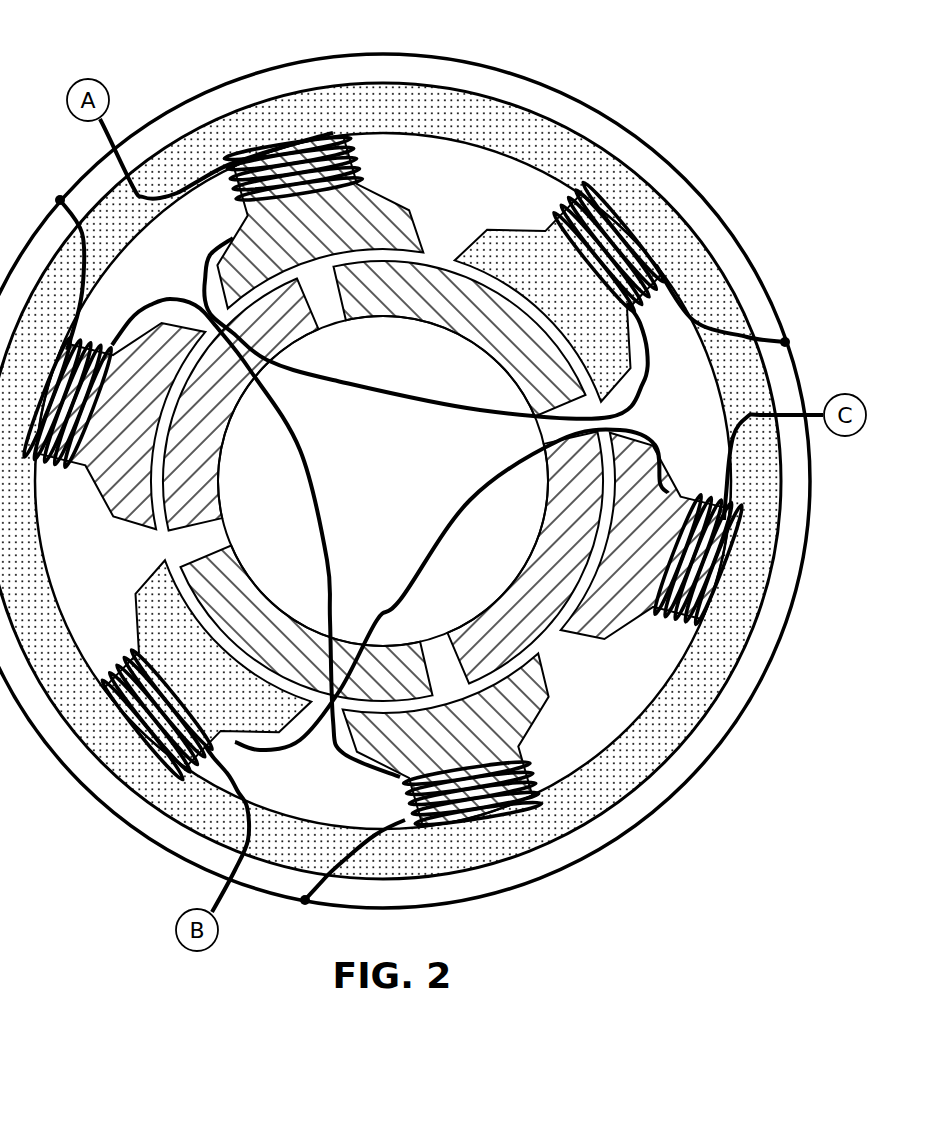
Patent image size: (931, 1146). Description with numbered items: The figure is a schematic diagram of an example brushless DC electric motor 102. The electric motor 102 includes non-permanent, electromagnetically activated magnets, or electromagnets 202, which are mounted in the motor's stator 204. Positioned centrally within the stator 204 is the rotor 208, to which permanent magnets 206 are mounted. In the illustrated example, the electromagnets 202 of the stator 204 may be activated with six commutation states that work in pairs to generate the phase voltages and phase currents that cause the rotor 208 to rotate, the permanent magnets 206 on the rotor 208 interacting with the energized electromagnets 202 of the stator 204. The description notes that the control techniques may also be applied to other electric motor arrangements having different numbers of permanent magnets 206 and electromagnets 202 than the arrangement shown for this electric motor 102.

The electric motor 102 is at (693, 72).
The electromagnets 202 is at (404, 203).
The stator 204 is at (527, 98).
The permanent magnets 206 is at (440, 330).
The rotor 208 is at (361, 492).